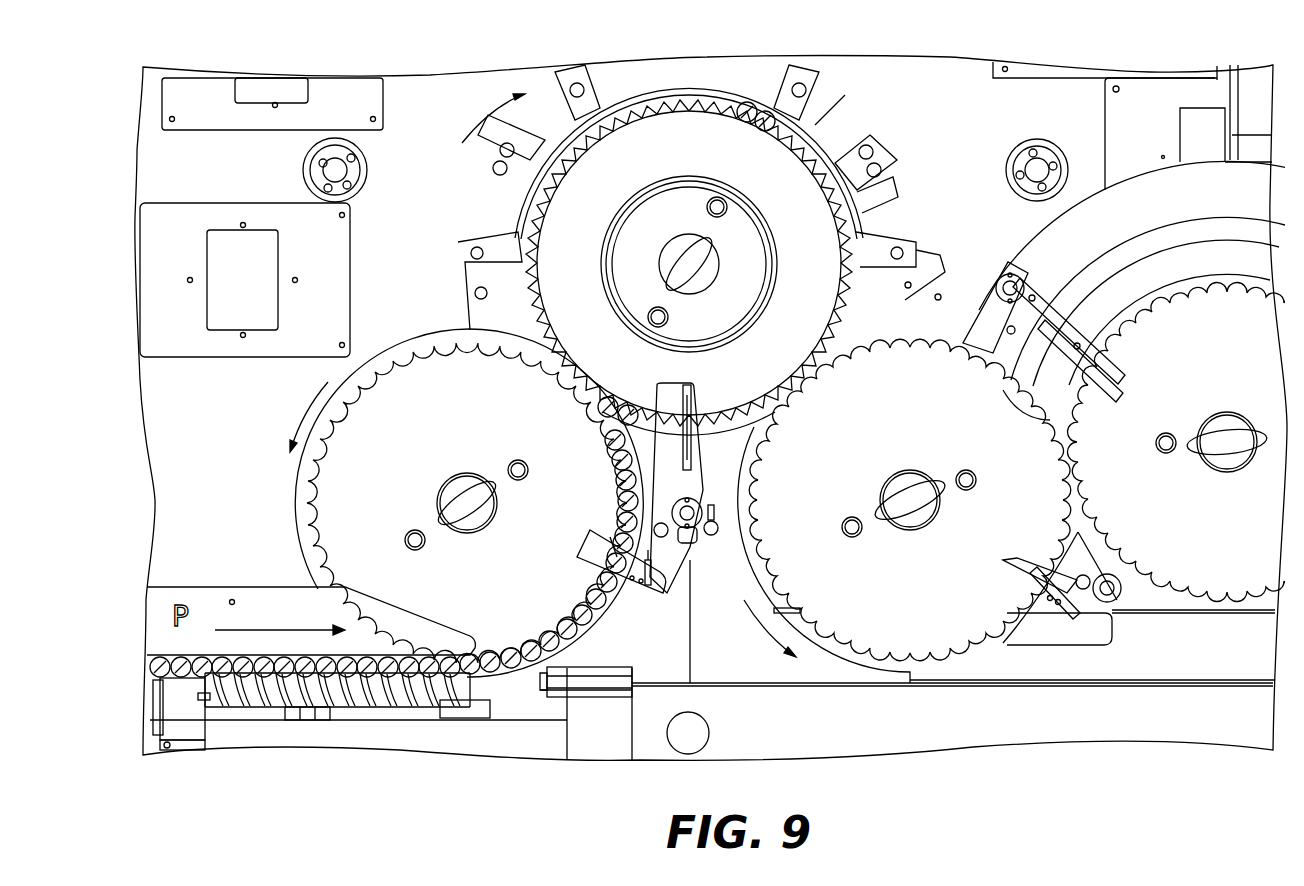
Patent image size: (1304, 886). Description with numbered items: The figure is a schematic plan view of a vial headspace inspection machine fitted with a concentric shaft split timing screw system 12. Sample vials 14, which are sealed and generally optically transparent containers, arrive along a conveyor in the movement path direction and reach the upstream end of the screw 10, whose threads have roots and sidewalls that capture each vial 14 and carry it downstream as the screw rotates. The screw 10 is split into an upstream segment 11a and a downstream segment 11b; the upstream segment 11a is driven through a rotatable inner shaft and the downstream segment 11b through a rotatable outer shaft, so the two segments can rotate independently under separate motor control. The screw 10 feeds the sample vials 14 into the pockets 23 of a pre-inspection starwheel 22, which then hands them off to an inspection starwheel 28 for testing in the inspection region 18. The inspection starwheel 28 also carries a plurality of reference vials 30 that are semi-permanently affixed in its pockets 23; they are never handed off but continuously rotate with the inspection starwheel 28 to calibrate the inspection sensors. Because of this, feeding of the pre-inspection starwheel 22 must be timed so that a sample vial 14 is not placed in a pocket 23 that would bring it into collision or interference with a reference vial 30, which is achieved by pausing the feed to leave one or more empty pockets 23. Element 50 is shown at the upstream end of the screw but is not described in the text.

The screw 10 is at (337, 737).
The upstream segment 11a is at (267, 692).
The downstream segment 11b is at (380, 692).
The concentric shaft split timing screw system 12 is at (505, 770).
The vials 14 is at (425, 658).
The inspection region 18 is at (822, 124).
The pre-inspection starwheel 22 is at (345, 517).
The pockets 23 is at (395, 378).
The inspection starwheel 28 is at (548, 228).
The reference vials 30 is at (750, 112).
The end stop 50 is at (148, 688).